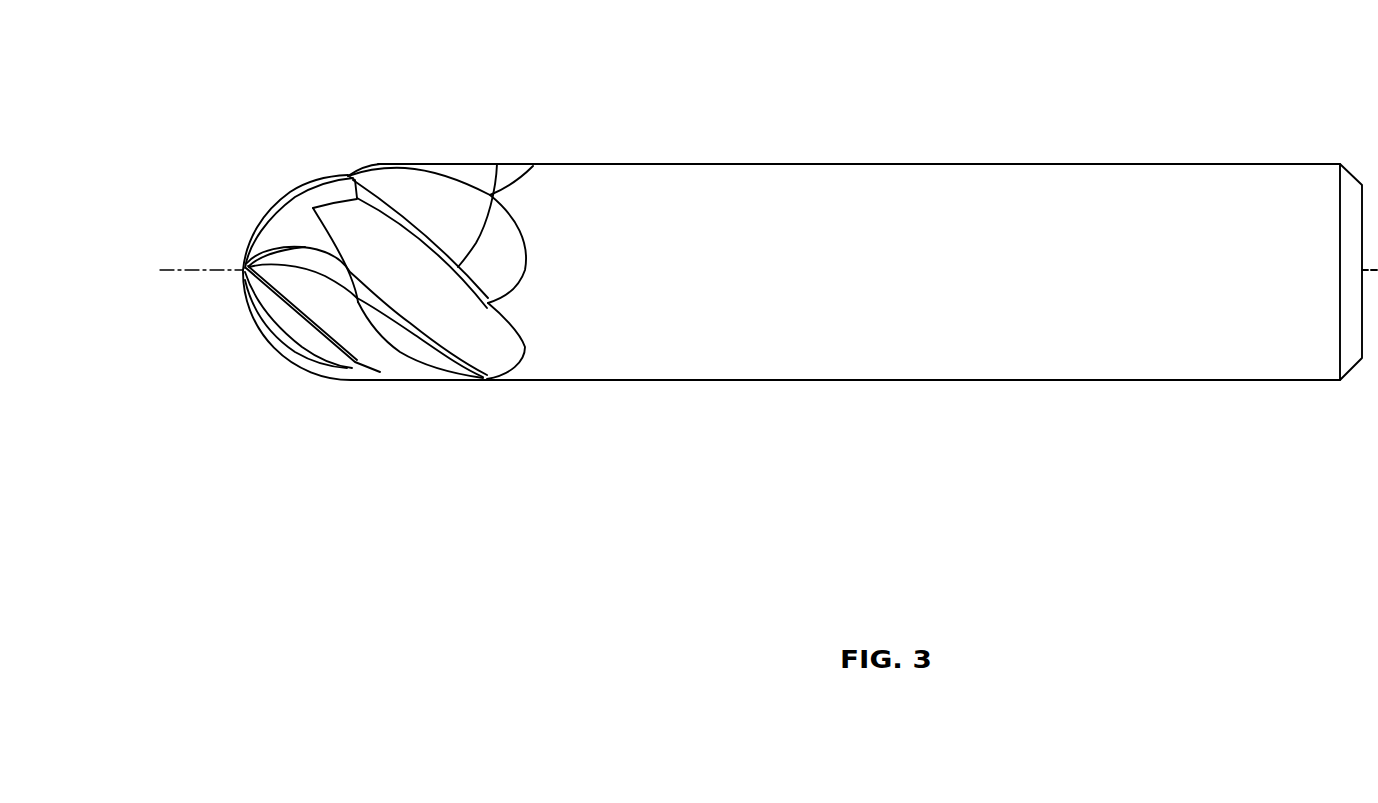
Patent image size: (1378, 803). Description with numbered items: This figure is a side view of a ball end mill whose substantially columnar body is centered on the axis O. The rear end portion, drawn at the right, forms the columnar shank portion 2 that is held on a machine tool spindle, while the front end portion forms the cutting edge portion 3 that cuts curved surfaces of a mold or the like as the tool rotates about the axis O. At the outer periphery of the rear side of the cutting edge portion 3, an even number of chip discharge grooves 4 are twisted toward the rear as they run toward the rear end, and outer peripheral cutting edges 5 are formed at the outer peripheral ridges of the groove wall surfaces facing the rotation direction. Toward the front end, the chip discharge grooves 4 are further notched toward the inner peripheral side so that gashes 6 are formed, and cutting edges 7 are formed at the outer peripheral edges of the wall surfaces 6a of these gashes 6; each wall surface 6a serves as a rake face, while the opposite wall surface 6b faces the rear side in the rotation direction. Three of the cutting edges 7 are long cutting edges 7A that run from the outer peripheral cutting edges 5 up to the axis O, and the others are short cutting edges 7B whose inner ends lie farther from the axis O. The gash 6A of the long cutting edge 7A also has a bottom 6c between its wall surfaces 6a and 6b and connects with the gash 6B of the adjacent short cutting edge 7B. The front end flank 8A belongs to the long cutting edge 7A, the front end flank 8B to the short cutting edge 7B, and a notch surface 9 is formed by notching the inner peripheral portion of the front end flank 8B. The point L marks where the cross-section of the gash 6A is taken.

The shank portion 2 is at (572, 137).
The cutting edge portion 3 is at (458, 125).
The chip discharge grooves 4 is at (443, 214).
The outer peripheral cutting edges 5 is at (443, 177).
The gashes 6 is at (328, 298).
The gash of the long cutting edge 6A is at (285, 448).
The gash of the short cutting edge 6B is at (304, 226).
The wall surface 6a is at (302, 335).
The wall surface 6b is at (363, 345).
The bottom 6c is at (330, 340).
The cutting edges 7 is at (281, 271).
The long cutting edges 7A is at (298, 188).
The short cutting edges 7B is at (287, 243).
The front end flank 8A is at (248, 343).
The front end flank 8B is at (275, 245).
The notch surface 9 is at (243, 268).
The axis O is at (184, 268).
The point L is at (356, 358).